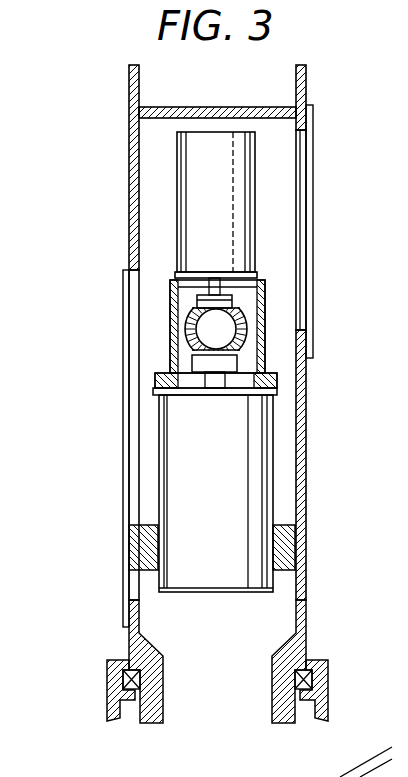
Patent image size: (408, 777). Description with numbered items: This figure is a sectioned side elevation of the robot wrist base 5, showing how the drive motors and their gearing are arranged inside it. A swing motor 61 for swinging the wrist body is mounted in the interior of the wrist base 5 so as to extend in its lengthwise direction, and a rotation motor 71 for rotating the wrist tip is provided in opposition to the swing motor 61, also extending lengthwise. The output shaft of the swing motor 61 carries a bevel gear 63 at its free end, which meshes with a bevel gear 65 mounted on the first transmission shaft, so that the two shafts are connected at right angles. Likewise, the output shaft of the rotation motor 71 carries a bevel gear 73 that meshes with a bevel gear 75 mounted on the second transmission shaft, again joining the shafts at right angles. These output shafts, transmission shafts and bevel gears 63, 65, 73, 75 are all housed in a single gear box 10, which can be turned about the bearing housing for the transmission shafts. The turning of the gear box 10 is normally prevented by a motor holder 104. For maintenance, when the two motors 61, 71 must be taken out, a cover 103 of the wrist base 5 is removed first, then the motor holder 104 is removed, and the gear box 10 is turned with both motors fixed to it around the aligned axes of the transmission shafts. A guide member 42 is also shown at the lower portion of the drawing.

The wrist base 5 is at (308, 392).
The gear box 10 is at (262, 306).
The guide foot 42 is at (302, 668).
The swing motor 61 is at (258, 452).
The bevel gear 63 is at (193, 369).
The bevel gear 65 is at (149, 329).
The bevel gear 75 is at (188, 334).
The rotation motor 71 is at (230, 170).
The bevel gear 73 is at (232, 300).
The cover 103 is at (313, 218).
The motor holder 104 is at (133, 560).